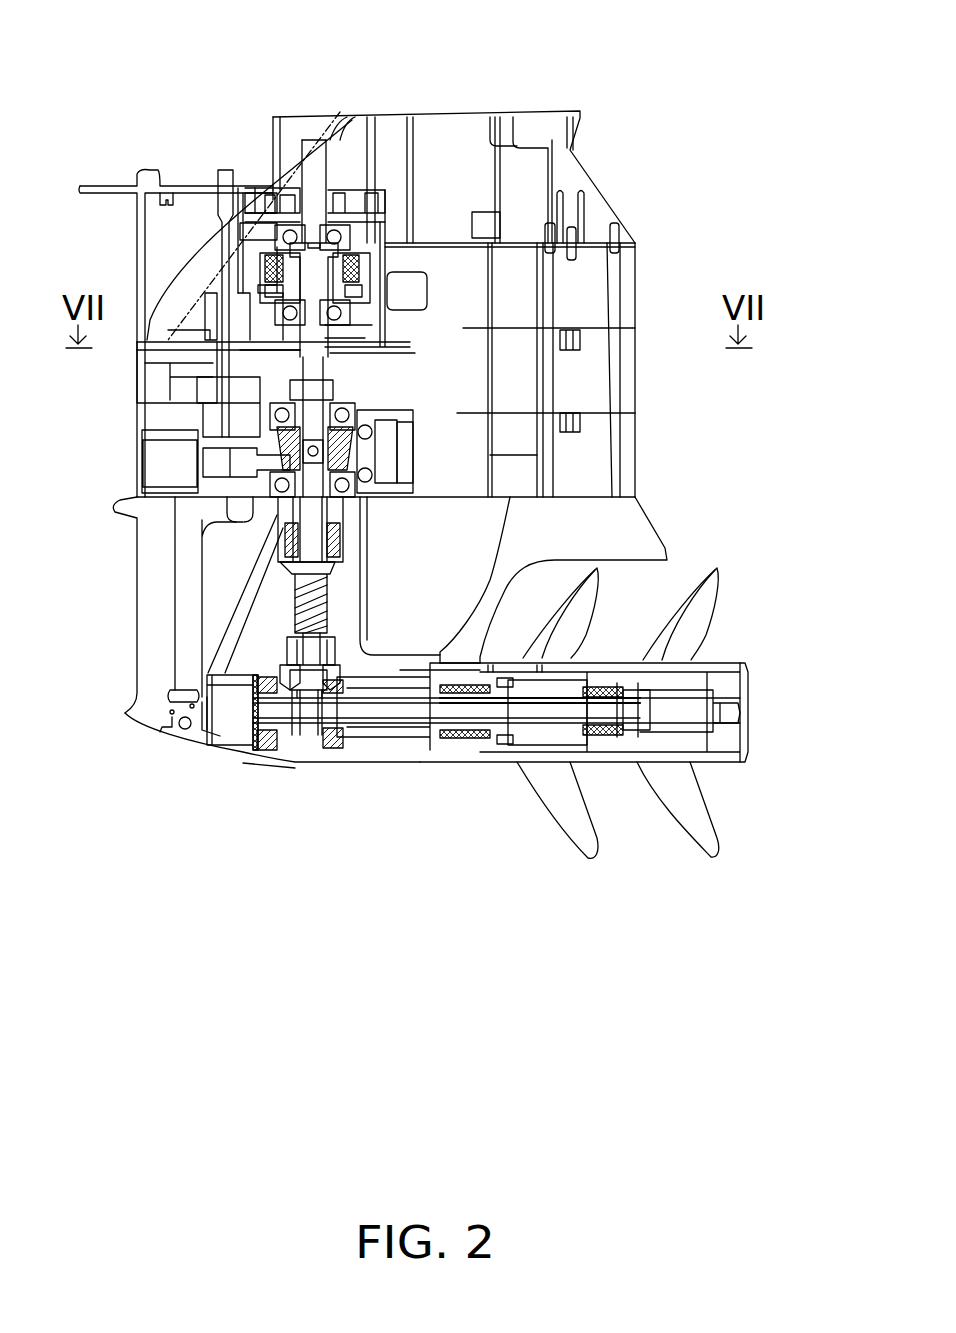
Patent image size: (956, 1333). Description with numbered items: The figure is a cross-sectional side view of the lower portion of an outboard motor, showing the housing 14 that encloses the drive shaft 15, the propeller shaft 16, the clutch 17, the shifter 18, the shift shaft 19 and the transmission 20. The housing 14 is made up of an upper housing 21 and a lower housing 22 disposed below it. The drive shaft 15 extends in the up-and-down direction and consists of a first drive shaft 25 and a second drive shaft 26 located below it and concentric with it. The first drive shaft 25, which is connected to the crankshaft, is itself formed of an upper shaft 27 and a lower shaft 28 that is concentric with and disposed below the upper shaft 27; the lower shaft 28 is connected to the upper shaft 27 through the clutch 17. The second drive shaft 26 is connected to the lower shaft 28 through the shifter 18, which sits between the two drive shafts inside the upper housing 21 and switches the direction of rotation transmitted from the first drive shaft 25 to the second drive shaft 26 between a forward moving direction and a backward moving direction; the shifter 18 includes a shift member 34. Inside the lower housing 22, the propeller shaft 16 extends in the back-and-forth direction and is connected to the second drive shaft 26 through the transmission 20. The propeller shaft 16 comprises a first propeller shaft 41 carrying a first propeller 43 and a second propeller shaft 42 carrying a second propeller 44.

The housing 14 is at (752, 435).
The drive shaft 15 is at (308, 128).
The propeller shaft 16 is at (470, 855).
The clutch 17 is at (274, 244).
The shifter 18 is at (360, 405).
The shift shaft 19 is at (220, 231).
The transmission 20 is at (306, 747).
The upper housing 21 is at (637, 437).
The lower housing 22 is at (630, 537).
The first drive shaft 25 is at (690, 205).
The second drive shaft 26 is at (293, 595).
The upper shaft 27 is at (393, 208).
The lower shaft 28 is at (318, 313).
The shift member 34 is at (217, 463).
The first propeller shaft 41 is at (399, 735).
The second propeller shaft 42 is at (428, 715).
The first propeller 43 is at (540, 763).
The second propeller 44 is at (625, 763).